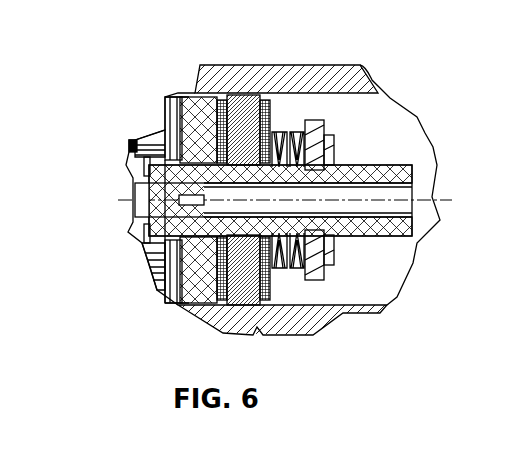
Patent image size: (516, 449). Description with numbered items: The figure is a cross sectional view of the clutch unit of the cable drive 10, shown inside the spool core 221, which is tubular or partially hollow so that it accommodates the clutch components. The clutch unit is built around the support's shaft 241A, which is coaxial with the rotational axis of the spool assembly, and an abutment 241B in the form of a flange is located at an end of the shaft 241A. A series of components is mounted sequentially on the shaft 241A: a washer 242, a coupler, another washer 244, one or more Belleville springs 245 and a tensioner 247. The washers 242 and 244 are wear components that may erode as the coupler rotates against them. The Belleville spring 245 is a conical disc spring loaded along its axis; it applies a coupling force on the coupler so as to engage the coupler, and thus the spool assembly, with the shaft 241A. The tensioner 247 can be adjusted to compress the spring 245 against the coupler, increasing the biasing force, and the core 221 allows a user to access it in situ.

The motor assembly 10 is at (226, 299).
The core 221 is at (352, 80).
The shaft 241A is at (389, 240).
The abutment 241B is at (198, 238).
The washer 242 is at (208, 127).
The washer 244 is at (243, 273).
The Belleville spring 245 is at (286, 121).
The tensioner 247 is at (338, 144).